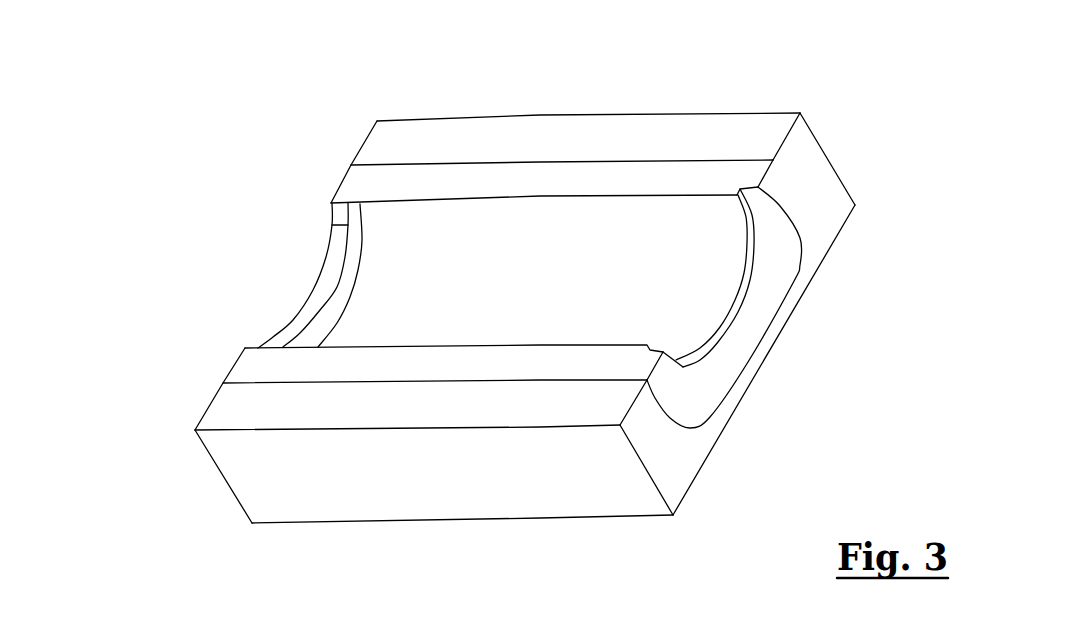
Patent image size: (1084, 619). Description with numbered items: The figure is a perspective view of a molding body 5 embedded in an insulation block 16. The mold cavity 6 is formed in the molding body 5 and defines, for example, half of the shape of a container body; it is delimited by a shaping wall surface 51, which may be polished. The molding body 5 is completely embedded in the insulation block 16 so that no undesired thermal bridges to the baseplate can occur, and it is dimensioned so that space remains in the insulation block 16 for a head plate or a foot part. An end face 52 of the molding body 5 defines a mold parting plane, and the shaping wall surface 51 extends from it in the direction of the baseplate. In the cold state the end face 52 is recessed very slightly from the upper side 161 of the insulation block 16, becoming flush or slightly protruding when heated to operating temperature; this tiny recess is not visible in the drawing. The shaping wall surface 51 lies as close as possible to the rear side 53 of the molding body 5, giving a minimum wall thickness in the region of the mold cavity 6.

The molding body 5 is at (572, 175).
The mold cavity 6 is at (453, 270).
The insulation block 16 is at (709, 123).
The upper side of the insulation block 161 is at (253, 413).
The wall surface 51 is at (645, 297).
The end face 52 is at (253, 362).
The rear side 53 is at (795, 281).